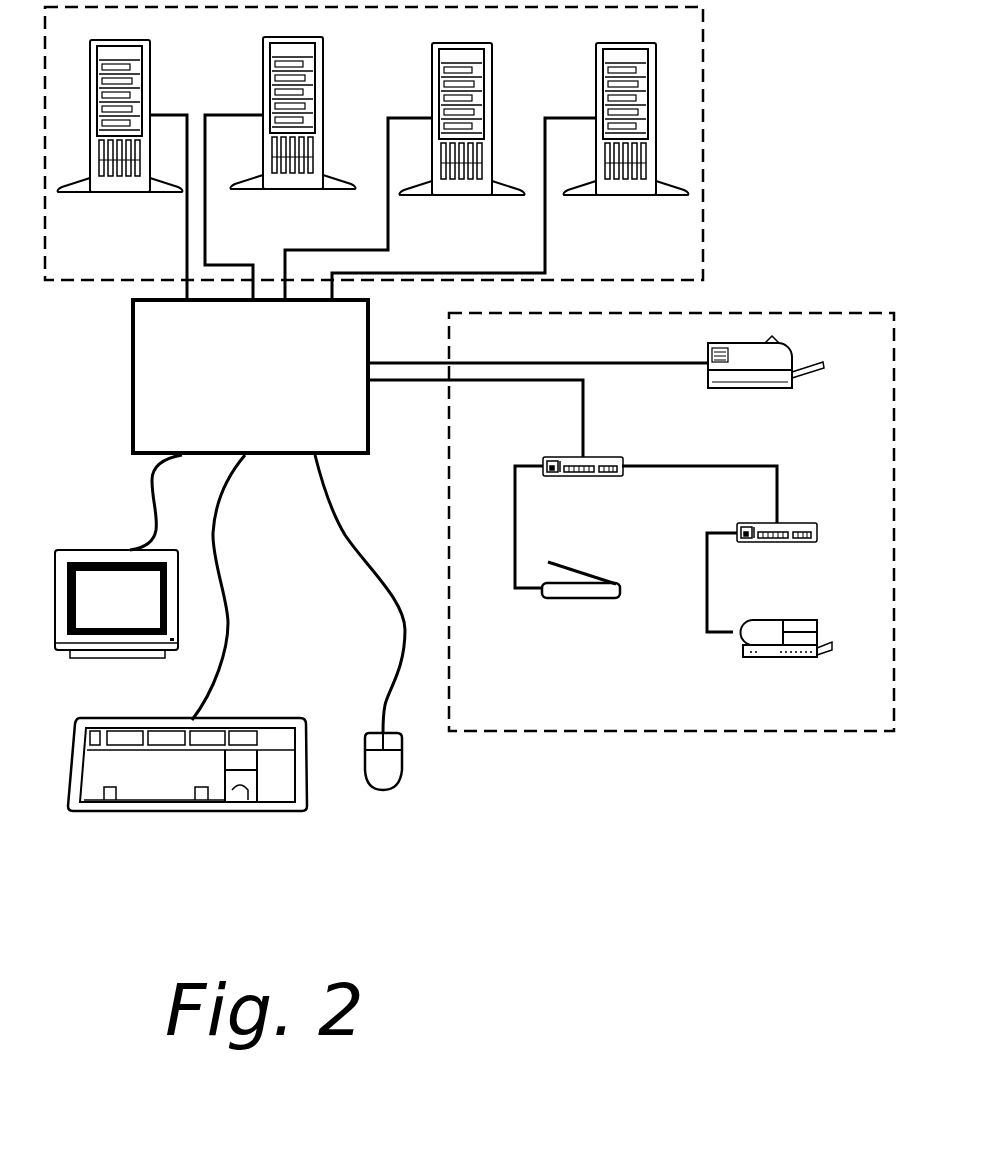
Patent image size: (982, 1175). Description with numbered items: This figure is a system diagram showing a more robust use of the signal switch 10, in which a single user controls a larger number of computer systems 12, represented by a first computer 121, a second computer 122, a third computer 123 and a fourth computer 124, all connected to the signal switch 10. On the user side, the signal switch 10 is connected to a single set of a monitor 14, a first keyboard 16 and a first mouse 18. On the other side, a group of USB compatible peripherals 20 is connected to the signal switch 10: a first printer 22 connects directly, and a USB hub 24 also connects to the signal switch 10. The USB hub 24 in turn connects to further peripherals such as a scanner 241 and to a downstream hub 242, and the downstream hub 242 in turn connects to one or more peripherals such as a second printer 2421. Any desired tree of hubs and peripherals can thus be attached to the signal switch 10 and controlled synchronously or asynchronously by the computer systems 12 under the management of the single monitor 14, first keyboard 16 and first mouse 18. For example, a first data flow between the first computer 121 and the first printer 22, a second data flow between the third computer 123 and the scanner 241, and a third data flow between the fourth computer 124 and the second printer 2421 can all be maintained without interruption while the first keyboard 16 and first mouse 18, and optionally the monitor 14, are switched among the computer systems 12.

The signal switch 10 is at (266, 390).
The computer systems 12 is at (396, 63).
The first computer 121 is at (140, 229).
The second computer 122 is at (315, 229).
The third computer 123 is at (484, 231).
The fourth computer 124 is at (645, 231).
The monitor 14 is at (131, 691).
The first keyboard 16 is at (206, 848).
The first mouse 18 is at (398, 826).
The USB compatible peripherals 20 is at (525, 696).
The first printer 22 is at (766, 423).
The USB hub 24 is at (599, 505).
The scanner 241 is at (605, 631).
The downstream hub 242 is at (799, 575).
The second printer 2421 is at (803, 688).